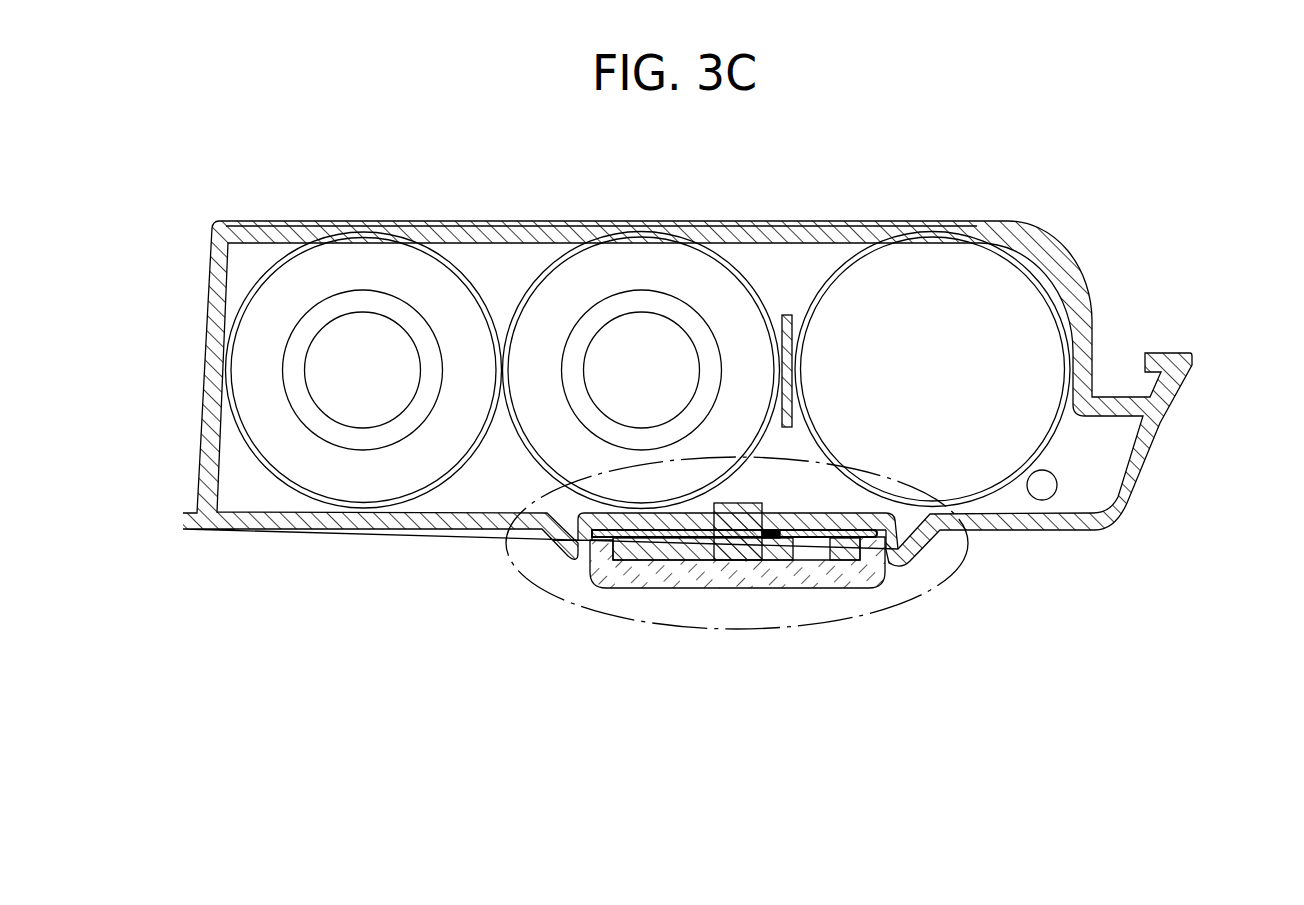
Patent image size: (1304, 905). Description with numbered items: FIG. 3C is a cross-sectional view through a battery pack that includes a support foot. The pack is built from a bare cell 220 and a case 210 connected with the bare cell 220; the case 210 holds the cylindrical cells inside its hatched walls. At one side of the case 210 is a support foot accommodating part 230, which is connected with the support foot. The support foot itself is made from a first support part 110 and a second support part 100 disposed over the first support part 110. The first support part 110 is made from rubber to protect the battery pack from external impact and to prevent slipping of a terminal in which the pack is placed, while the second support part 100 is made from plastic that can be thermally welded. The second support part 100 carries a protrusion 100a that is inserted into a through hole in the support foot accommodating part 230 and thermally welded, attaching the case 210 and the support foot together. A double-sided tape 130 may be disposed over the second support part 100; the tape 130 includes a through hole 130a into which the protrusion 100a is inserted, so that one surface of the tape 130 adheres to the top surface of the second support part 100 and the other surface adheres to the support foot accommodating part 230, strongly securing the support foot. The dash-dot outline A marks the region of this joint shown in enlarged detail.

The case 210 is at (1147, 438).
The bare cell 220 is at (250, 357).
The support foot accommodating part 230 is at (575, 563).
The second support part 100 is at (620, 572).
The protrusion 100a is at (743, 567).
The first support part 110 is at (650, 580).
The double-sided tape 130 is at (678, 572).
The through hole 130a is at (817, 542).
The detail region A is at (880, 612).